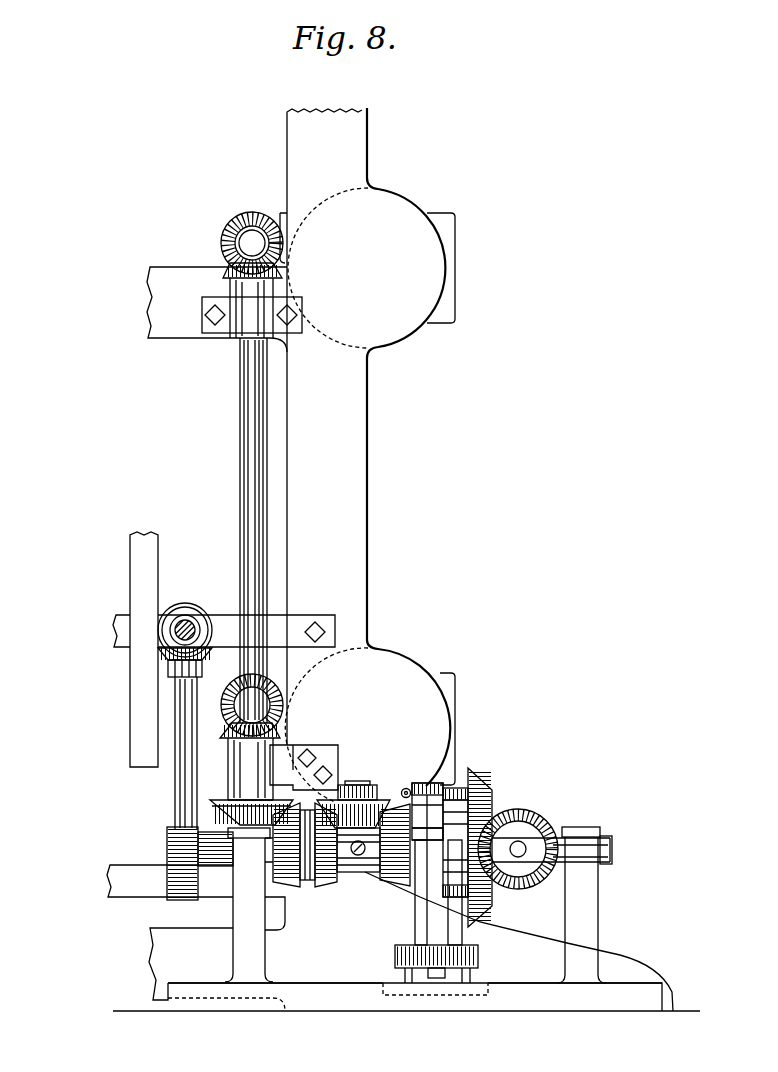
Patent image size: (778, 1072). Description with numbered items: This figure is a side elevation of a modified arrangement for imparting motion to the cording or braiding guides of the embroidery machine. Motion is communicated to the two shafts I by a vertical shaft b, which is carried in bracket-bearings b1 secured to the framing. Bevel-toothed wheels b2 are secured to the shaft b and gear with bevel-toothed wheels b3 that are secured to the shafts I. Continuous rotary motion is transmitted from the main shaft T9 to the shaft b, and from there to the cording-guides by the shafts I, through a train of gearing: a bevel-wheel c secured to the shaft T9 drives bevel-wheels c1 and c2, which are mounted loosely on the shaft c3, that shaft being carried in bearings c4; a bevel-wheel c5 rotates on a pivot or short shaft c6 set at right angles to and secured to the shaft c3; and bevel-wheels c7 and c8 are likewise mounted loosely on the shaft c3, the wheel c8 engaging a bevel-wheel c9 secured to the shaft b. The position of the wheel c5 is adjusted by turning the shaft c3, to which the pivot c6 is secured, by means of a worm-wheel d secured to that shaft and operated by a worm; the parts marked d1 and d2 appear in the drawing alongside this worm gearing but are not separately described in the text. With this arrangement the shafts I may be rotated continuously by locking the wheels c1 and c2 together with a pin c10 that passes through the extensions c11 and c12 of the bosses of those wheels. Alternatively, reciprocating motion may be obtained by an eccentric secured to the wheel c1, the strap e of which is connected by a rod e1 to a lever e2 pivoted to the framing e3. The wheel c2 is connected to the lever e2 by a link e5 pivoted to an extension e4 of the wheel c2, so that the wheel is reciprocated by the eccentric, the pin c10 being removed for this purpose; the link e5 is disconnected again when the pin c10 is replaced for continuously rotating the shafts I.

The vertical shaft b is at (245, 503).
The bracket-bearings b1 is at (250, 539).
The bevel-toothed wheels b2 is at (283, 277).
The bevel-toothed wheels b3 is at (243, 474).
The shafts I is at (290, 711).
The worm-wheel d is at (176, 818).
The gear d1 is at (168, 845).
The bevel pinion d2 is at (178, 788).
The bevel-wheel c is at (437, 823).
The bevel-wheel c1 is at (493, 798).
The bevel-wheel c2 is at (367, 870).
The shaft c3 is at (614, 849).
The bearings c4 is at (402, 904).
The bevel-wheel c5 is at (385, 798).
The pivot or short shaft c6 is at (357, 783).
The bevel-wheel c7 is at (328, 876).
The bevel-wheel c8 is at (297, 887).
The bevel-wheel c9 is at (235, 800).
The pin c10 is at (407, 788).
The extension c11 is at (427, 811).
The extension c12 is at (444, 787).
The strap e is at (455, 848).
The rod e1 is at (450, 892).
The lever e2 is at (435, 975).
The framing e3 is at (415, 995).
The extension e4 is at (427, 829).
The link e5 is at (411, 892).
The main shaft T9 is at (540, 815).